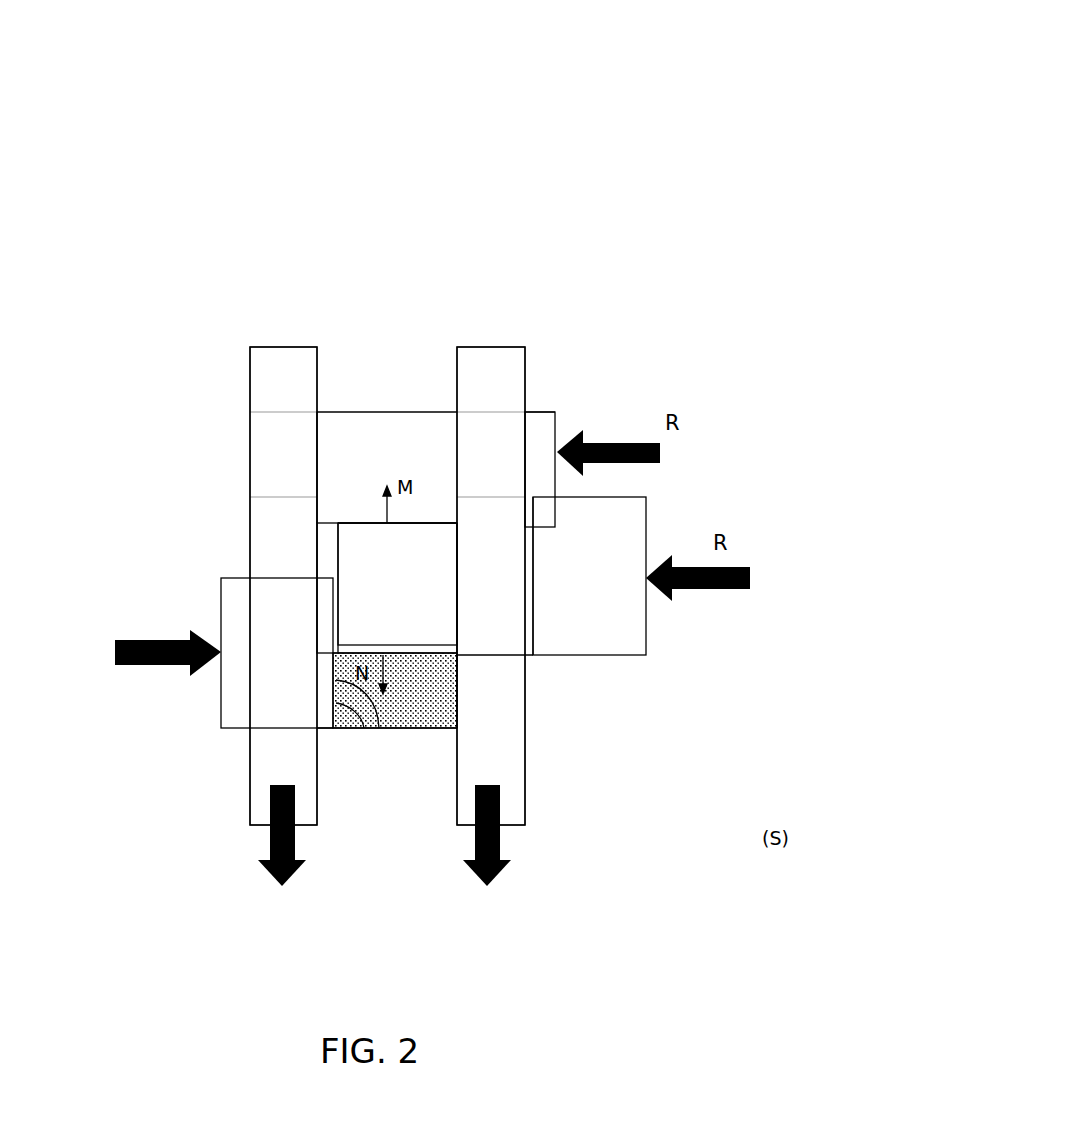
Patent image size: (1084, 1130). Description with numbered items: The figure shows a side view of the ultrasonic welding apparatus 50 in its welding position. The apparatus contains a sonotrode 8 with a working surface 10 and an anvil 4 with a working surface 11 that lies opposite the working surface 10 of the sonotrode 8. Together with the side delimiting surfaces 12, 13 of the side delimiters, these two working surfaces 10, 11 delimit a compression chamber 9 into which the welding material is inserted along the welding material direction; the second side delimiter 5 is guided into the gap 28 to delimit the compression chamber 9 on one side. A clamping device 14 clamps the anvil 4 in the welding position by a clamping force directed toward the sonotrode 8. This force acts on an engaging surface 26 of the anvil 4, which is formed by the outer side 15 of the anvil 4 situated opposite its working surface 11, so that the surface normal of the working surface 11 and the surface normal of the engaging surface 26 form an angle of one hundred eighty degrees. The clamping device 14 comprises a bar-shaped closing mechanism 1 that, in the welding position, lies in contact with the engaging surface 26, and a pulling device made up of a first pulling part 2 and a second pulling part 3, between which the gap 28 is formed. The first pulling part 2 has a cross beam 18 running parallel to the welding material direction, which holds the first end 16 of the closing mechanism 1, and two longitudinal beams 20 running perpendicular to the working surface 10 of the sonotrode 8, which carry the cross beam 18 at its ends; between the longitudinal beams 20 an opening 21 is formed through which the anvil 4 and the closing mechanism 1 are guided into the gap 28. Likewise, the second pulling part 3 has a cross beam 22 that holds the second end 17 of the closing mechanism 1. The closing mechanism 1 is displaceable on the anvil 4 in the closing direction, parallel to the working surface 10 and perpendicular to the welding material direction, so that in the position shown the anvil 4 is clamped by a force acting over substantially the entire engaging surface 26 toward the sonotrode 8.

The ultrasonic welding apparatus 50 is at (629, 66).
The closing mechanism 1 is at (365, 412).
The first pulling part 2 is at (497, 385).
The second pulling part 3 is at (270, 357).
The anvil 4 is at (608, 537).
The second side delimiter 5 is at (232, 598).
The sonotrode 8 is at (420, 742).
The compression chamber 9 is at (458, 686).
The working surface 10 is at (445, 714).
The working surface 11 is at (458, 672).
The side delimiting surface 12 is at (379, 728).
The side delimiting surface 13 is at (400, 728).
The clamping device 14 is at (571, 406).
The outer side 15 is at (375, 523).
The first end 16 is at (536, 412).
The second end 17 is at (326, 412).
The cross beam 18 is at (510, 366).
The longitudinal beams 20 is at (497, 610).
The opening 21 is at (532, 628).
The cross beam 22 is at (270, 378).
The engaging surface 26 is at (375, 523).
The gap 28 is at (325, 550).